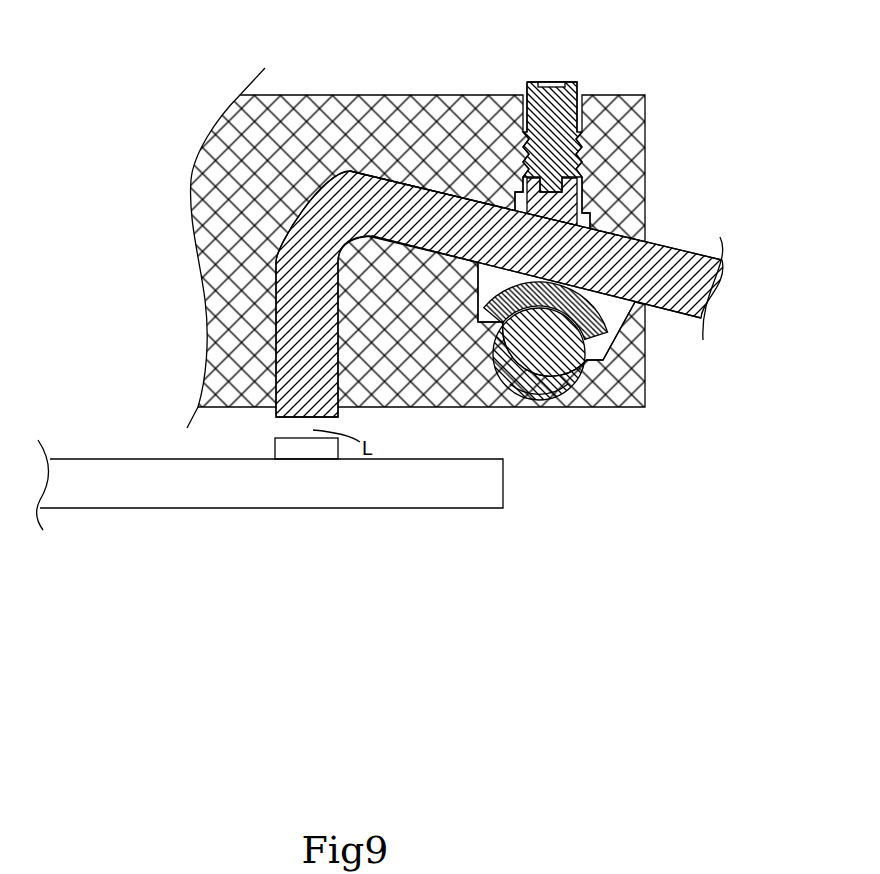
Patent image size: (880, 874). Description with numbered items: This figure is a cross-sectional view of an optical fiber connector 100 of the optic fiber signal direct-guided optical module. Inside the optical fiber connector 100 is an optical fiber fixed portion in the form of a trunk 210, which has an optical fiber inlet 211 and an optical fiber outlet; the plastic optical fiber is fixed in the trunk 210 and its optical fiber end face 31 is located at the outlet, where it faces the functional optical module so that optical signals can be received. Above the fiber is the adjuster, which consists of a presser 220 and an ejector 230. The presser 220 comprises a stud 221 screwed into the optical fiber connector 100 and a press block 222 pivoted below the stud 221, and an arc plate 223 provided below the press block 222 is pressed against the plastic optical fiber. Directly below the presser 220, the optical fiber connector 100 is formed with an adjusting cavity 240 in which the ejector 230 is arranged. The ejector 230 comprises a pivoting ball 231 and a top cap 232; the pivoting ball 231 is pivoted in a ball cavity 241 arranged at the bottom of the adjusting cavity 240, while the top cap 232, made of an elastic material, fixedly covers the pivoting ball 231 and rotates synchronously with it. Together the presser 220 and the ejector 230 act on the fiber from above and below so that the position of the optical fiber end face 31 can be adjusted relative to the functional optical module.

The optical fiber connector 100 is at (414, 110).
The trunk 210 is at (428, 294).
The optical fiber inlet 211 is at (648, 243).
The presser 220 is at (554, 109).
The stud 221 is at (565, 102).
The press block 222 is at (582, 194).
The arc plate 223 is at (578, 213).
The ejector 230 is at (597, 385).
The pivoting ball 231 is at (542, 353).
The top cap 232 is at (612, 328).
The adjusting cavity 240 is at (488, 325).
The ball cavity 241 is at (548, 405).
The optical fiber end face 31 is at (280, 418).